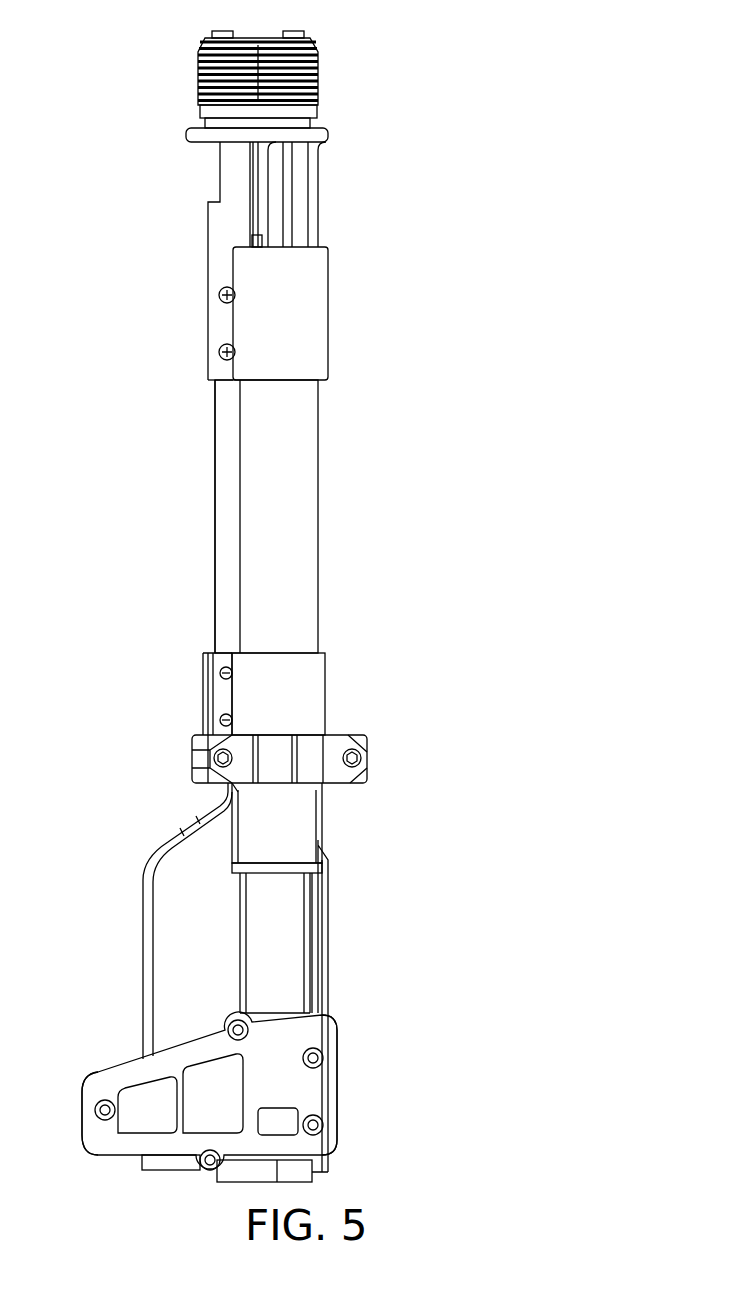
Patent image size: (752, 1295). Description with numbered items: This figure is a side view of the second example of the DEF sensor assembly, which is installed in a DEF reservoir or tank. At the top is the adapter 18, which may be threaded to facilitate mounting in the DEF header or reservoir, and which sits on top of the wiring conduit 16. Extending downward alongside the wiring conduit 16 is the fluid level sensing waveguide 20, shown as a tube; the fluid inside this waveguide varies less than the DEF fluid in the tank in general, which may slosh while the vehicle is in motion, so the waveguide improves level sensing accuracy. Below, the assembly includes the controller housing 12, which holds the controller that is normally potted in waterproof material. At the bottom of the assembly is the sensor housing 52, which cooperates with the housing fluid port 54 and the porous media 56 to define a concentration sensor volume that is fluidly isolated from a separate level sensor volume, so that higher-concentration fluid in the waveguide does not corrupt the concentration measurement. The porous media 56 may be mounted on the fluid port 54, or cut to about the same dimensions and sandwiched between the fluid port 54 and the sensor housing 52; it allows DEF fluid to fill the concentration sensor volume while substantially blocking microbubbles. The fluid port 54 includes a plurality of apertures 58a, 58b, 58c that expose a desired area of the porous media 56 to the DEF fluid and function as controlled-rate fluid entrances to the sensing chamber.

The controller housing 12 is at (165, 925).
The wiring conduit 16 is at (222, 551).
The adapter 18 is at (207, 50).
The fluid level sensing waveguide 20 is at (295, 563).
The sensor housing 52 is at (234, 1110).
The housing fluid port 54 is at (322, 1092).
The porous media 56 is at (130, 1098).
The aperture 58a is at (135, 1133).
The aperture 58b is at (198, 1135).
The aperture 58c is at (282, 1110).